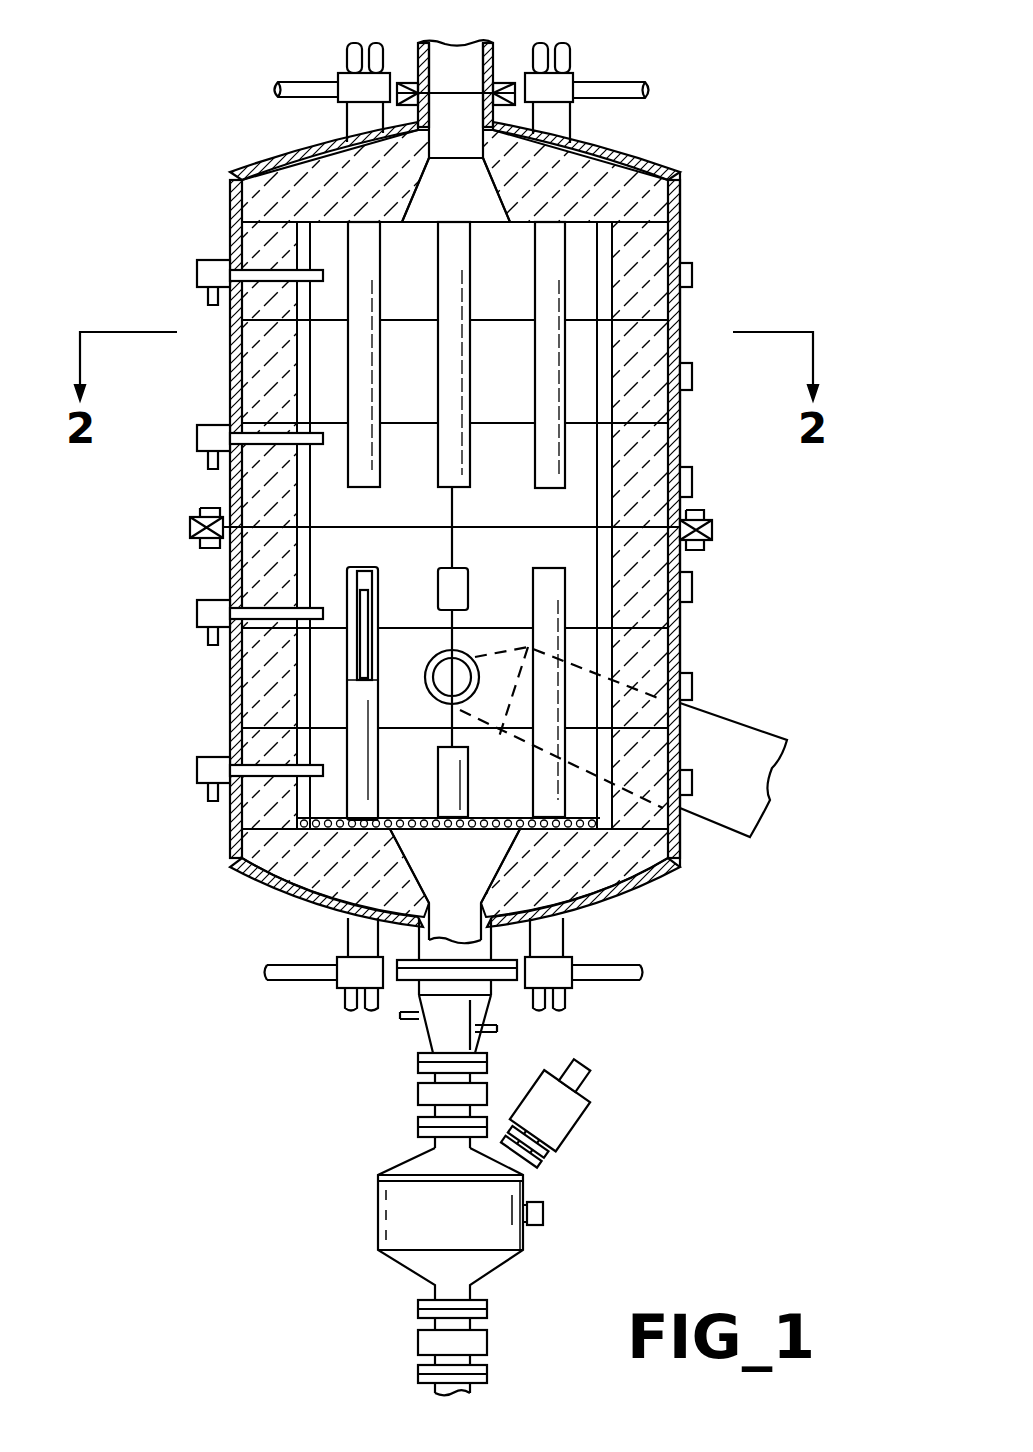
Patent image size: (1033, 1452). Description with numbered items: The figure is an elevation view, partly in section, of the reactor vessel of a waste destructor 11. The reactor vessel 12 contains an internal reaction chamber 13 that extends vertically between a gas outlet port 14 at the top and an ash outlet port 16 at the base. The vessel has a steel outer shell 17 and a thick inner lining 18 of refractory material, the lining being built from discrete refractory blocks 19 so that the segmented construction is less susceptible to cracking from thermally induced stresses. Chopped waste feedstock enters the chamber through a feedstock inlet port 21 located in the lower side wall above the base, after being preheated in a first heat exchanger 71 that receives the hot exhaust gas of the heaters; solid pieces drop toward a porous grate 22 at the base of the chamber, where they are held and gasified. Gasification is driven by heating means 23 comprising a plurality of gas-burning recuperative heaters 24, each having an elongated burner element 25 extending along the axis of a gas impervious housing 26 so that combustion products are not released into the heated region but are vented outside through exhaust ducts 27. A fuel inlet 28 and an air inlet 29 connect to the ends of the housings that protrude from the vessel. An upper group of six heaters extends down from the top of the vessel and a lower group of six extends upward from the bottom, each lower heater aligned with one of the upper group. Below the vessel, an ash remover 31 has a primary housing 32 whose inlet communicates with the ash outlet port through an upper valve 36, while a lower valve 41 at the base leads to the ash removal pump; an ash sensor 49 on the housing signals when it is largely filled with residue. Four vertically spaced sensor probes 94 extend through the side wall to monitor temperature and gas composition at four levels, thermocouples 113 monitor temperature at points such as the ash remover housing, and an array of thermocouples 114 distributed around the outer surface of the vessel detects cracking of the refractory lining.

The waste destructor 11 is at (460, 514).
The reactor vessel 12 is at (692, 645).
The reaction chamber 13 is at (610, 475).
The gas outlet port 14 is at (413, 192).
The ash outlet port 16 is at (408, 858).
The steel outer shell 17 is at (677, 313).
The inner lining 18 is at (595, 545).
The refractory blocks 19 is at (515, 617).
The feedstock inlet port 21 is at (440, 690).
The grate 22 is at (400, 818).
The heating means 23 is at (330, 240).
The heaters 24 is at (628, 935).
The burner element 25 is at (357, 640).
The housing 26 is at (260, 657).
The exhaust ducts 27 is at (632, 100).
The fuel inlet 28 is at (568, 53).
The air inlet 29 is at (537, 54).
The ash remover 31 is at (495, 1174).
The primary housing 32 is at (472, 1223).
The upper valve 36 is at (418, 1092).
The lower valve 41 is at (418, 1342).
The ash sensor 49 is at (608, 1132).
The first heat exchanger 71 is at (750, 725).
The sensor probes 94 is at (164, 779).
The thermocouples 113 is at (545, 1213).
The thermocouples 114 is at (722, 845).